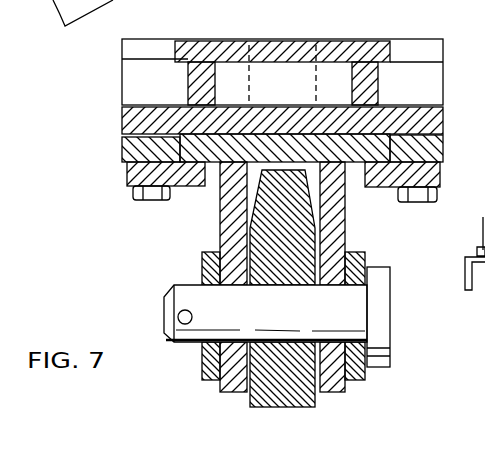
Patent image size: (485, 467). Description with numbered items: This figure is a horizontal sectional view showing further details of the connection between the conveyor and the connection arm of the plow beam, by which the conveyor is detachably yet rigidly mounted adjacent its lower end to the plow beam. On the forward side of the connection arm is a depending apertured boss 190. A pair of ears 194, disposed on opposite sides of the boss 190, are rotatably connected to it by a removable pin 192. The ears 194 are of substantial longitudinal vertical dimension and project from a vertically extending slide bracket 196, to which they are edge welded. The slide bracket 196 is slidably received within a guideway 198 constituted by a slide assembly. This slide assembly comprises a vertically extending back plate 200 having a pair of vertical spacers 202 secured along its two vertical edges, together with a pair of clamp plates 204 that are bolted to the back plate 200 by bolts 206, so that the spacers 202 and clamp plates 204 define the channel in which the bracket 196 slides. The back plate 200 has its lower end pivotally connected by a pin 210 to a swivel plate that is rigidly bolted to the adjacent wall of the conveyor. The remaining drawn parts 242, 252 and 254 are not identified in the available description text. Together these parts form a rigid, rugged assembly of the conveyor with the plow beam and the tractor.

The apertured boss 190 is at (250, 402).
The removable pin 192 is at (165, 315).
The ears 194 is at (221, 235).
The slide bracket 196 is at (180, 143).
The guideway 198 is at (212, 172).
The back plate 200 is at (122, 117).
The vertical spacers 202 is at (123, 154).
The clamp plates 204 is at (127, 178).
The bolts 206 is at (134, 199).
The pin 210 is at (293, 68).
The link block 242 is at (482, 230).
The housing 252 is at (303, 72).
The bracket 254 is at (468, 186).